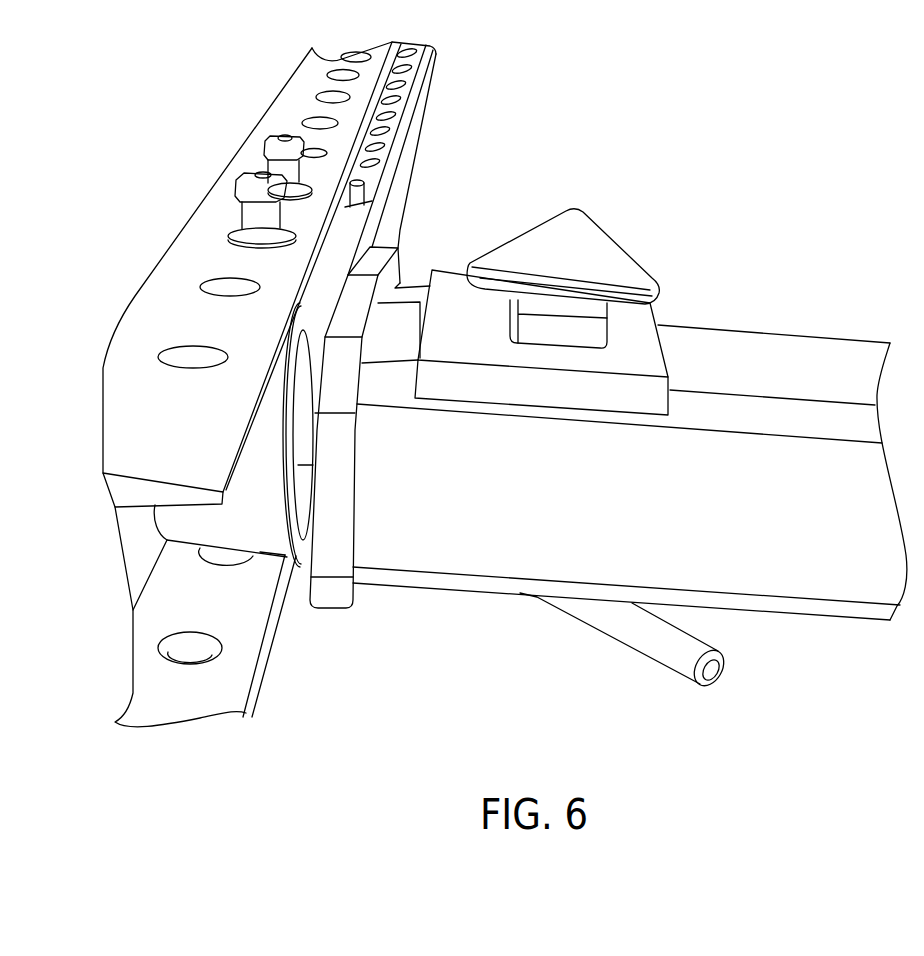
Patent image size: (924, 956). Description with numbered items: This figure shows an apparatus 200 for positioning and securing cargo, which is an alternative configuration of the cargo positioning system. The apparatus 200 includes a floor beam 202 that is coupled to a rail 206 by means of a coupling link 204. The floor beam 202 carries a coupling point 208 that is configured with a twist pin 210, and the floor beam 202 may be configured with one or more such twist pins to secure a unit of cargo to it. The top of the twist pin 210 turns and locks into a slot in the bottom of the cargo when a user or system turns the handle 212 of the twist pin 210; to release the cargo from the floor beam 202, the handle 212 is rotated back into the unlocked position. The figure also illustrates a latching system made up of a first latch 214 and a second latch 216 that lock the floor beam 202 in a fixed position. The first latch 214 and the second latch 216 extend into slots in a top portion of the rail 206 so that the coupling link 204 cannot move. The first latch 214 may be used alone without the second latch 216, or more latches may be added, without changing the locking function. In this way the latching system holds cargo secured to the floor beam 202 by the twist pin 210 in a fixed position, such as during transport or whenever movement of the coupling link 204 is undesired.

The apparatus 200 is at (797, 197).
The floor beam 202 is at (793, 338).
The coupling link 204 is at (255, 540).
The rail 206 is at (233, 680).
The coupling point 208 is at (656, 317).
The twist pin 210 is at (582, 212).
The handle 212 is at (725, 673).
The first latch 214 is at (242, 181).
The second latch 216 is at (266, 141).